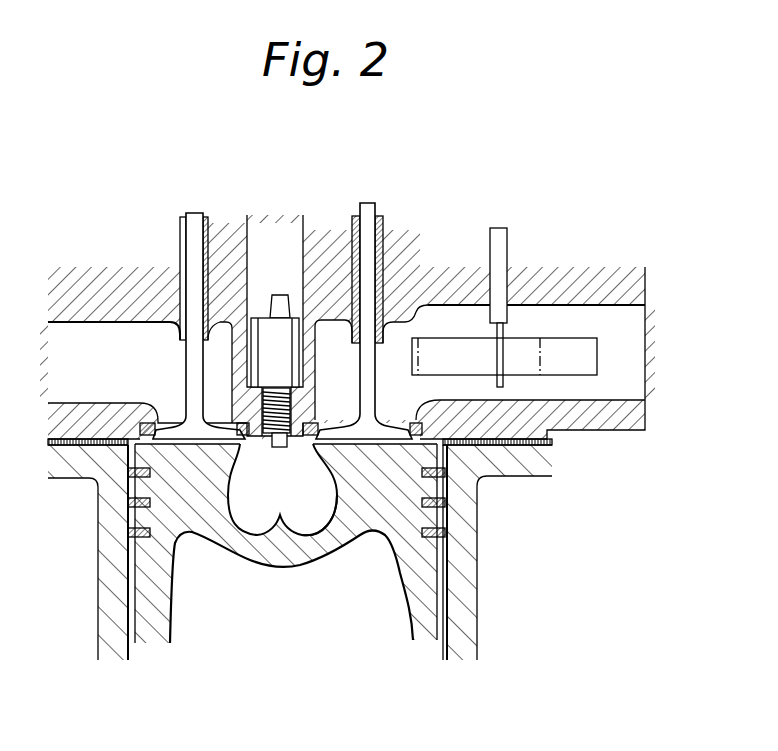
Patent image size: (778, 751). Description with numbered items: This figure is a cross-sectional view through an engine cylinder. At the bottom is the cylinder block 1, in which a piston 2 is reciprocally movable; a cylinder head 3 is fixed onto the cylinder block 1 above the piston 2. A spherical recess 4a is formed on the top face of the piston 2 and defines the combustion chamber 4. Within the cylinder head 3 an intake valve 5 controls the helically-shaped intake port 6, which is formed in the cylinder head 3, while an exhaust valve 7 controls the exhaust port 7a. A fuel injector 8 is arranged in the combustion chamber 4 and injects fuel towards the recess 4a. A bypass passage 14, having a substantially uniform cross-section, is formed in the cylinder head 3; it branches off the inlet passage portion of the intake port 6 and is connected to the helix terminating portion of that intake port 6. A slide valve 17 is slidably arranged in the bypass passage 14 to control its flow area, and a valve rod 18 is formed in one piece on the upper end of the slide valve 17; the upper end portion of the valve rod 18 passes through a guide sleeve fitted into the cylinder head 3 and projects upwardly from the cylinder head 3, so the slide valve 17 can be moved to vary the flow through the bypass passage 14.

The cylinder block 1 is at (105, 600).
The piston 2 is at (168, 614).
The cylinder head 3 is at (120, 292).
The combustion chamber 4 is at (283, 488).
The spherical recess 4a is at (335, 480).
The intake valve 5 is at (362, 370).
The intake port 6 is at (597, 313).
The exhaust valve 7 is at (210, 296).
The exhaust port 7a is at (110, 372).
The fuel injector 8 is at (268, 328).
The bypass passage 14 is at (532, 372).
The slide valve 17 is at (505, 348).
The valve rod 18 is at (492, 251).